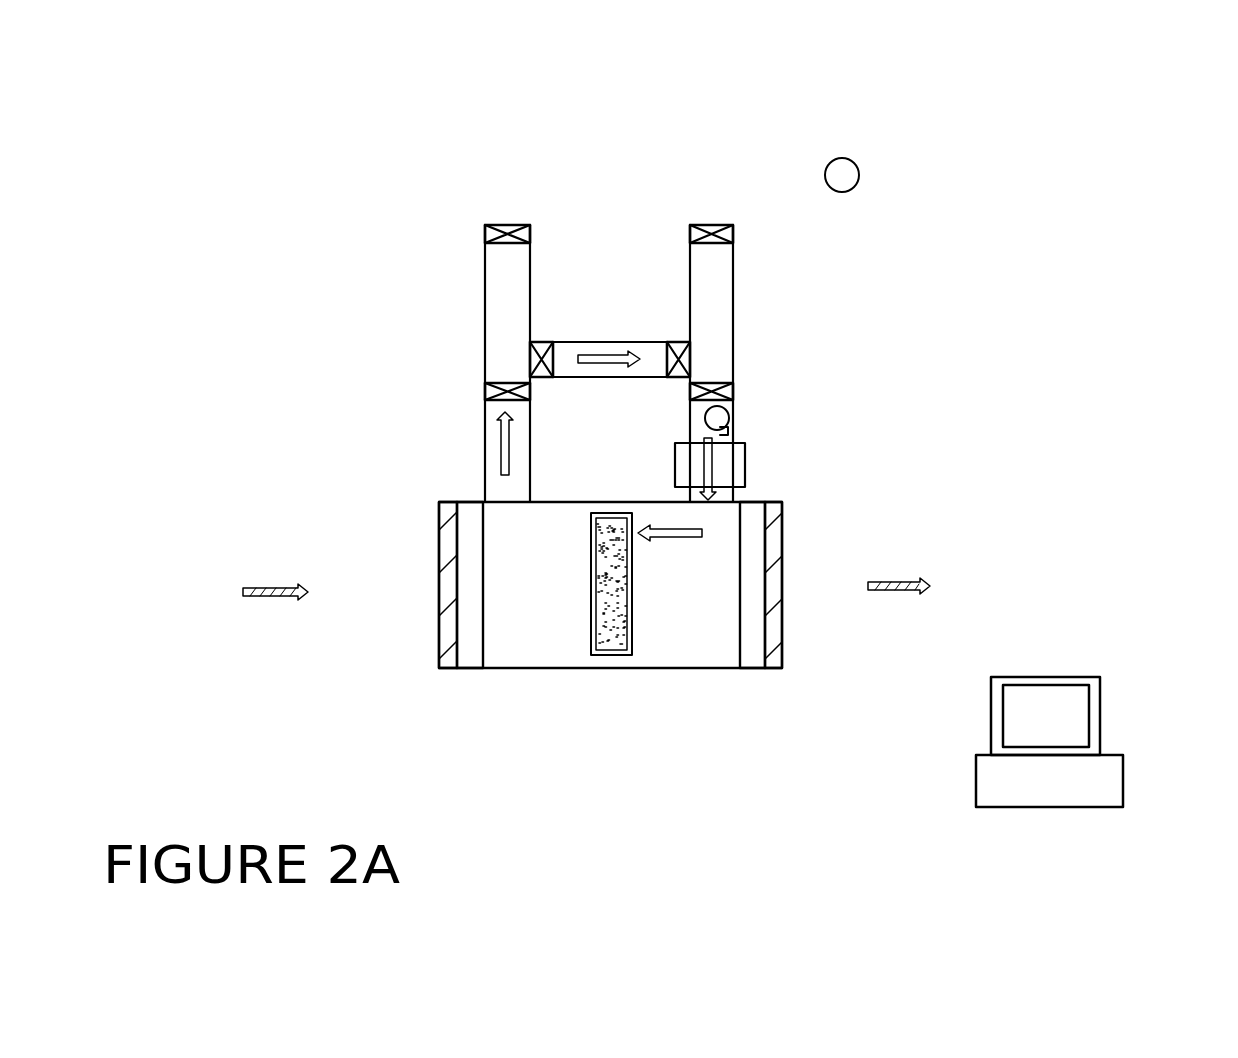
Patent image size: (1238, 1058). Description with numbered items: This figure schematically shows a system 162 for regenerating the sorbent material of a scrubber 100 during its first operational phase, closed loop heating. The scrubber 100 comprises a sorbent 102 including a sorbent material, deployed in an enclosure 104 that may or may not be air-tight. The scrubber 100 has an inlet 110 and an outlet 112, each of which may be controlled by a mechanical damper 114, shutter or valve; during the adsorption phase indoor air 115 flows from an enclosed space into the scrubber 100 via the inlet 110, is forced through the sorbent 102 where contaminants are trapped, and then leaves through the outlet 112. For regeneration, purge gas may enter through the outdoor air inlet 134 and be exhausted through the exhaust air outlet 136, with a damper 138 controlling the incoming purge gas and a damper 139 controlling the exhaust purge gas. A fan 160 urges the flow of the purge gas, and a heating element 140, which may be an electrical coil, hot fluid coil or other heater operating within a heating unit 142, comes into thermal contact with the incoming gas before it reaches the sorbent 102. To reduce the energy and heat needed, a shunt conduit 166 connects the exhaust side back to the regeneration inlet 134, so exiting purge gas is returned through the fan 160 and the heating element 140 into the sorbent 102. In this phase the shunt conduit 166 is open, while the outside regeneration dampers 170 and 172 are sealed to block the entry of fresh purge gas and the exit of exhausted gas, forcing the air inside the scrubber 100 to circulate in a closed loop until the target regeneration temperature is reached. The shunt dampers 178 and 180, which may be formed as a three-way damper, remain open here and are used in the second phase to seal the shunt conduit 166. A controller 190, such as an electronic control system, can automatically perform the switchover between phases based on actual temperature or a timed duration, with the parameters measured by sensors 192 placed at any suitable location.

The scrubber 100 is at (518, 669).
The sorbent 102 is at (611, 642).
The enclosure 104 is at (632, 647).
The inlet 110 is at (440, 540).
The outlet 112 is at (772, 627).
The mechanical damper 114 is at (480, 515).
The indoor air 115 is at (280, 601).
The outdoor air inlet 134 is at (720, 290).
The exhaust air outlet 136 is at (495, 297).
The damper 138 is at (733, 228).
The damper 139 is at (485, 232).
The heating element 140 is at (745, 443).
The heating unit 142 is at (718, 462).
The fan 160 is at (692, 415).
The system for regenerating a sorbent material 162 is at (232, 135).
The shunt conduit 166 is at (612, 342).
The damper 170 is at (733, 392).
The damper 172 is at (485, 392).
The shunt damper 178 is at (676, 342).
The shunt damper 180 is at (540, 342).
The controller 190 is at (1150, 745).
The sensors 192 is at (850, 173).